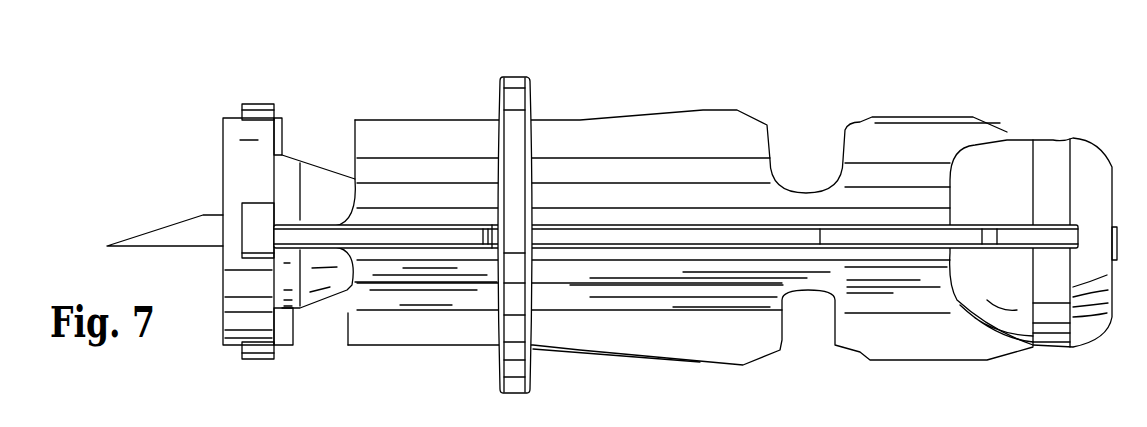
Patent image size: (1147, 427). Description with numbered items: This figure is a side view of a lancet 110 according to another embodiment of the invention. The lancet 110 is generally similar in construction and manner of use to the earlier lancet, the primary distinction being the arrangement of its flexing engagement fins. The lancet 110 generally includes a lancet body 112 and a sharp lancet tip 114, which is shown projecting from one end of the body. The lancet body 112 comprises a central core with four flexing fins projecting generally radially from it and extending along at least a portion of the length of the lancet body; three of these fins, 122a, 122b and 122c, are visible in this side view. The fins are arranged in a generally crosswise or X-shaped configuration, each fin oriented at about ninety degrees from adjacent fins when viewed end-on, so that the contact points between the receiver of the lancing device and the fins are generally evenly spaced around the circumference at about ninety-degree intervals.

The lancet 110 is at (258, 65).
The lancet body 112 is at (902, 178).
The sharp lancet tip 114 is at (178, 228).
The flexing fin 122a is at (703, 118).
The flexing fin 122b is at (820, 240).
The flexing fin 122c is at (672, 340).